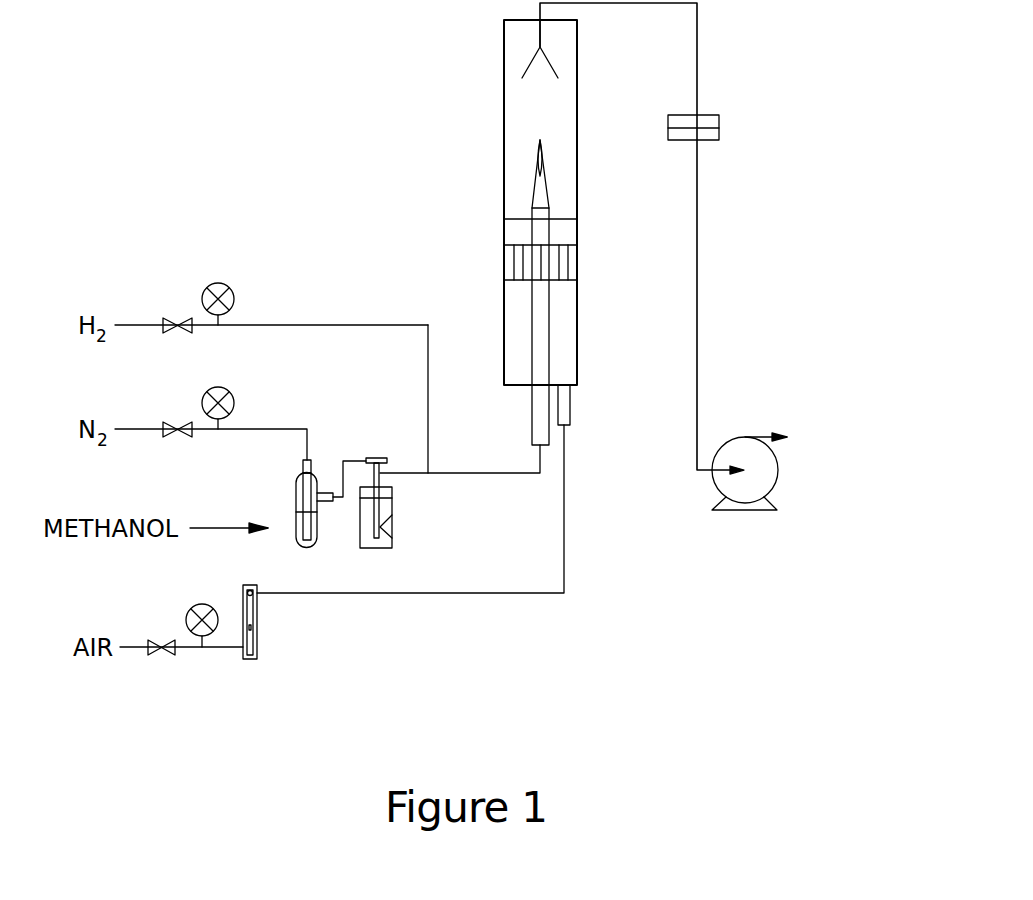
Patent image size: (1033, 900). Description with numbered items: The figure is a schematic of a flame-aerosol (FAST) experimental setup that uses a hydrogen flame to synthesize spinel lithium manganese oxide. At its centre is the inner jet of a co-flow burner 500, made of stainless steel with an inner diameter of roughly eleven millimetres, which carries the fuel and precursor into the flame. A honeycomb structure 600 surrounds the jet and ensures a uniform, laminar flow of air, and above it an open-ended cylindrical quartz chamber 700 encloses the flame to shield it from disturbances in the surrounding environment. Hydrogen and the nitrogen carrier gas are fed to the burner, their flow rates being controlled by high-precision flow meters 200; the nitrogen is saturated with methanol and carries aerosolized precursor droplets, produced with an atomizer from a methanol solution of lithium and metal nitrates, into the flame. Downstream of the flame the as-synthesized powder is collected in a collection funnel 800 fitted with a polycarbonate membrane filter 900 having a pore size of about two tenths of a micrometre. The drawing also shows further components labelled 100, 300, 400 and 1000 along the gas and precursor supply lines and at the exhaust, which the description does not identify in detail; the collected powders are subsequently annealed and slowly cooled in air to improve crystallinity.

The gas flow controller / valve assembly on hydrogen line 100 is at (234, 284).
The high-precision flow meters 200 is at (257, 652).
The methanol bubbler vessel 300 is at (310, 548).
The syringe pump 400 is at (392, 535).
The co-flow burner 500 is at (585, 282).
The honeycomb structure 600 is at (585, 245).
The open-ended cylindrical quartz chamber 700 is at (585, 20).
The collection funnel 800 is at (533, 66).
The membrane filter 900 is at (707, 113).
The vacuum pump 1000 is at (760, 512).